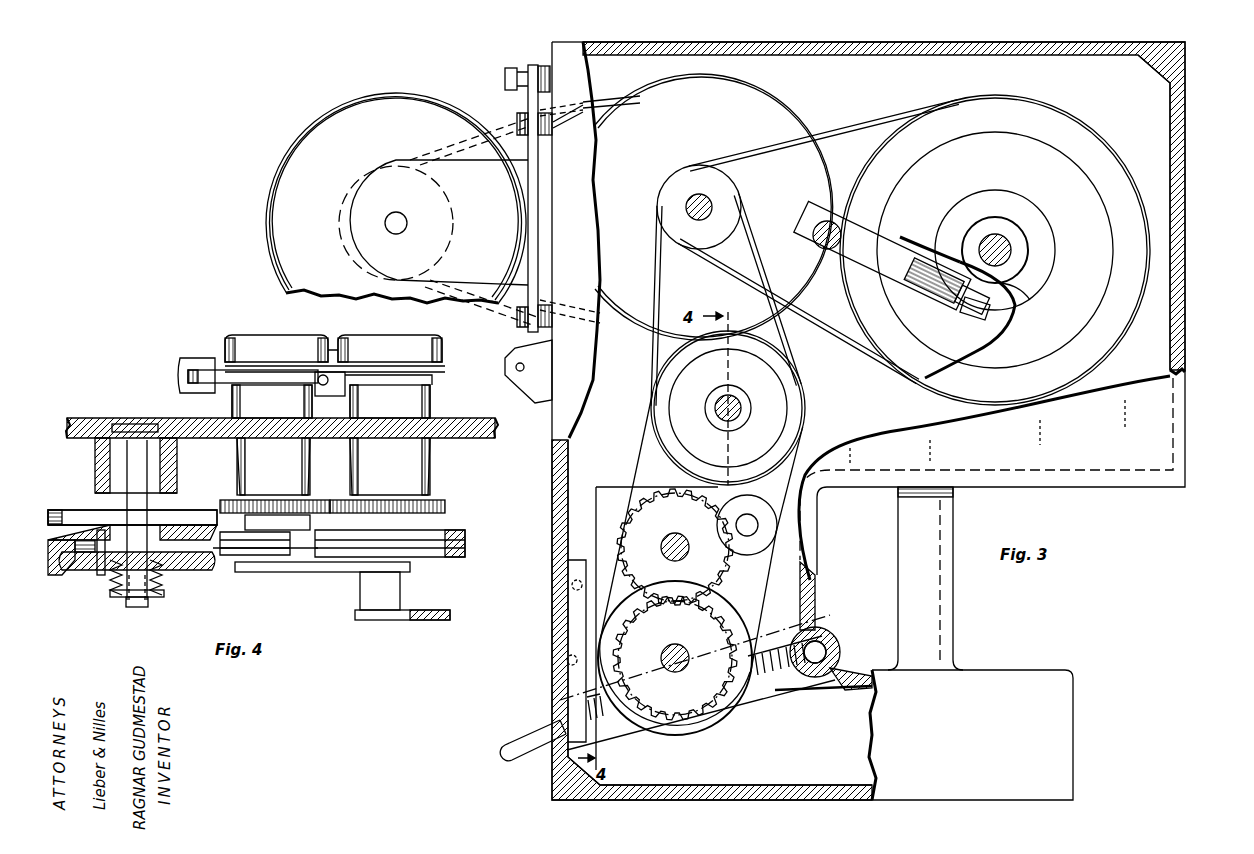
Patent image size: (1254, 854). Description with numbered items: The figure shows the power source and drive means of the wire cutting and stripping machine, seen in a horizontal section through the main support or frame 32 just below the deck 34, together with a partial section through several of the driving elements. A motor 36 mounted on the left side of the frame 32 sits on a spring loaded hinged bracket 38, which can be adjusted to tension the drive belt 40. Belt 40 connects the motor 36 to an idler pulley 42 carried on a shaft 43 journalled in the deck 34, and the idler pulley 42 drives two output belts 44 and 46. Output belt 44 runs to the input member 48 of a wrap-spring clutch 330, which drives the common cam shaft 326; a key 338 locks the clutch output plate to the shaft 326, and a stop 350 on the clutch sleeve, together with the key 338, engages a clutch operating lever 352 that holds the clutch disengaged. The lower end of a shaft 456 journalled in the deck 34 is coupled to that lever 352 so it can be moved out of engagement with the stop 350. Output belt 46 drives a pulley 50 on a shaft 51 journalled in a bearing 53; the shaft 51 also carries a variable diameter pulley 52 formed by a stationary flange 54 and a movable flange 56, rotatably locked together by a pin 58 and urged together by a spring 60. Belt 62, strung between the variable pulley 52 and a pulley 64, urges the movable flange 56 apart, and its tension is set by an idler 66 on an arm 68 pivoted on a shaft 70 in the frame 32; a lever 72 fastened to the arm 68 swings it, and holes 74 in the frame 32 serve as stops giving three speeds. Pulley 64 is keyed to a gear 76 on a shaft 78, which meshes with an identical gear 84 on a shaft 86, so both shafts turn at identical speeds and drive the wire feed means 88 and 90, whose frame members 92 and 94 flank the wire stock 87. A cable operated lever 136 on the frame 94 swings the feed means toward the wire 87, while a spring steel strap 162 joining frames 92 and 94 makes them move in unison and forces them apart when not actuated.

In FIG. 3, the main support or frame 32 is at (1180, 62).
In FIG. 4, the main support or frame 32 is at (490, 440).
In FIG. 3, the deck 34 is at (553, 417).
In FIG. 4, the deck 34 is at (95, 418).
In FIG. 3, the motor 36 is at (310, 128).
In FIG. 3, the spring loaded hinged bracket 38 is at (528, 96).
In FIG. 3, the drive belt 40 is at (600, 102).
In FIG. 3, the idler pulley 42 is at (780, 115).
In FIG. 3, the shaft 43 is at (686, 207).
In FIG. 3, the output belt 44 is at (866, 125).
In FIG. 3, the output belt 46 is at (656, 293).
In FIG. 4, the output belt 46 is at (52, 510).
In FIG. 3, the input member 48 is at (880, 172).
In FIG. 3, the pulley 50 is at (792, 386).
In FIG. 4, the pulley 50 is at (168, 512).
In FIG. 3, the shaft 51 is at (745, 408).
In FIG. 4, the shaft 51 is at (150, 495).
In FIG. 4, the variable diameter pulley 52 is at (60, 578).
In FIG. 4, the bearing 53 is at (130, 432).
In FIG. 4, the stationary flange 54 is at (75, 545).
In FIG. 4, the movable flange 56 is at (200, 572).
In FIG. 4, the pin 58 is at (100, 578).
In FIG. 4, the spring 60 is at (162, 600).
In FIG. 3, the belt 62 is at (642, 455).
In FIG. 4, the belt 62 is at (220, 560).
In FIG. 3, the pulley 64 is at (702, 735).
In FIG. 4, the pulley 64 is at (462, 534).
In FIG. 3, the idler 66 is at (747, 525).
In FIG. 4, the idler 66 is at (272, 560).
In FIG. 3, the arm 68 is at (815, 588).
In FIG. 4, the arm 68 is at (310, 573).
In FIG. 3, the shaft 70 is at (826, 646).
In FIG. 4, the shaft 70 is at (380, 620).
In FIG. 3, the lever 72 is at (764, 690).
In FIG. 4, the lever 72 is at (428, 620).
In FIG. 3, the holes 74 is at (572, 585).
In FIG. 3, the gear 76 is at (675, 658).
In FIG. 4, the gear 76 is at (452, 506).
In FIG. 3, the shaft 78 is at (680, 652).
In FIG. 3, the gear 84 is at (675, 547).
In FIG. 4, the gear 84 is at (272, 497).
In FIG. 3, the shaft 86 is at (666, 557).
In FIG. 4, the shaft 86 is at (292, 496).
In FIG. 4, the wire stock 87 is at (333, 348).
In FIG. 4, the wire feed means 88 is at (445, 346).
In FIG. 4, the wire feed means 90 is at (225, 342).
In FIG. 4, the frame member 92 is at (432, 384).
In FIG. 4, the frame member 94 is at (240, 392).
In FIG. 4, the cable operated lever 136 is at (183, 362).
In FIG. 4, the spring steel strap 162 is at (332, 393).
In FIG. 3, the shaft 326 is at (998, 242).
In FIG. 3, the clutch 330 is at (1035, 290).
In FIG. 3, the key 338 is at (1020, 320).
In FIG. 3, the stop 350 is at (978, 320).
In FIG. 3, the clutch operating lever 352 is at (938, 300).
In FIG. 3, the shaft 456 is at (822, 220).